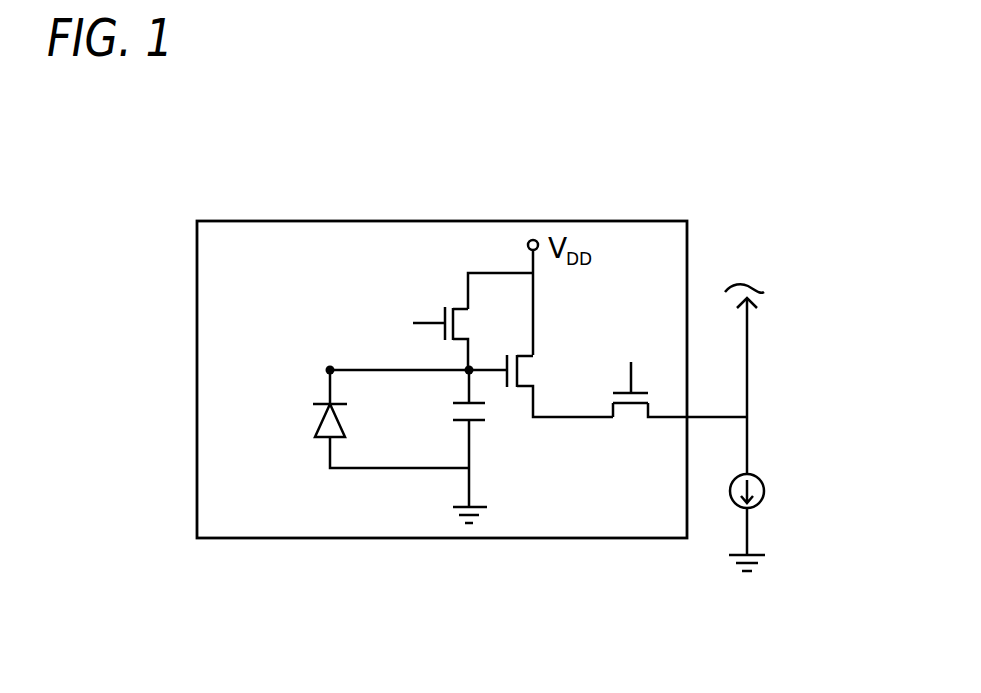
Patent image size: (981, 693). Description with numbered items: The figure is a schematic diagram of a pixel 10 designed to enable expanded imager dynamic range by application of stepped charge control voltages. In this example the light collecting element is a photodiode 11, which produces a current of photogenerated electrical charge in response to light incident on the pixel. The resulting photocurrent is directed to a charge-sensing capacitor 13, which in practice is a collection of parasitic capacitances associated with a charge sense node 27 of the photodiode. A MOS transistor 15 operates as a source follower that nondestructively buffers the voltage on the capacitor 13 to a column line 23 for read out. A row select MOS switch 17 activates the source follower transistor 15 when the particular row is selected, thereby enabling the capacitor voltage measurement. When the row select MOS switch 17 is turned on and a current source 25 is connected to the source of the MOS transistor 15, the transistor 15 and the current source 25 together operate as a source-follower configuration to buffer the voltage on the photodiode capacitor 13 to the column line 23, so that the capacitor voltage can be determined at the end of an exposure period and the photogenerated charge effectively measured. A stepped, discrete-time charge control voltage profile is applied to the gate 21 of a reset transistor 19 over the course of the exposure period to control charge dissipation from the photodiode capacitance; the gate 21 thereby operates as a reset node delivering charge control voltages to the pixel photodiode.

The pixel 10 is at (180, 284).
The photodiode 11 is at (318, 425).
The charge-sensing capacitor 13 is at (457, 412).
The MOS transistor 15 is at (517, 375).
The row select MOS switch 17 is at (633, 406).
The reset transistor 19 is at (420, 340).
The gate 21 is at (431, 322).
The column line 23 is at (747, 343).
The current source 25 is at (757, 480).
The charge sense node 27 is at (330, 370).